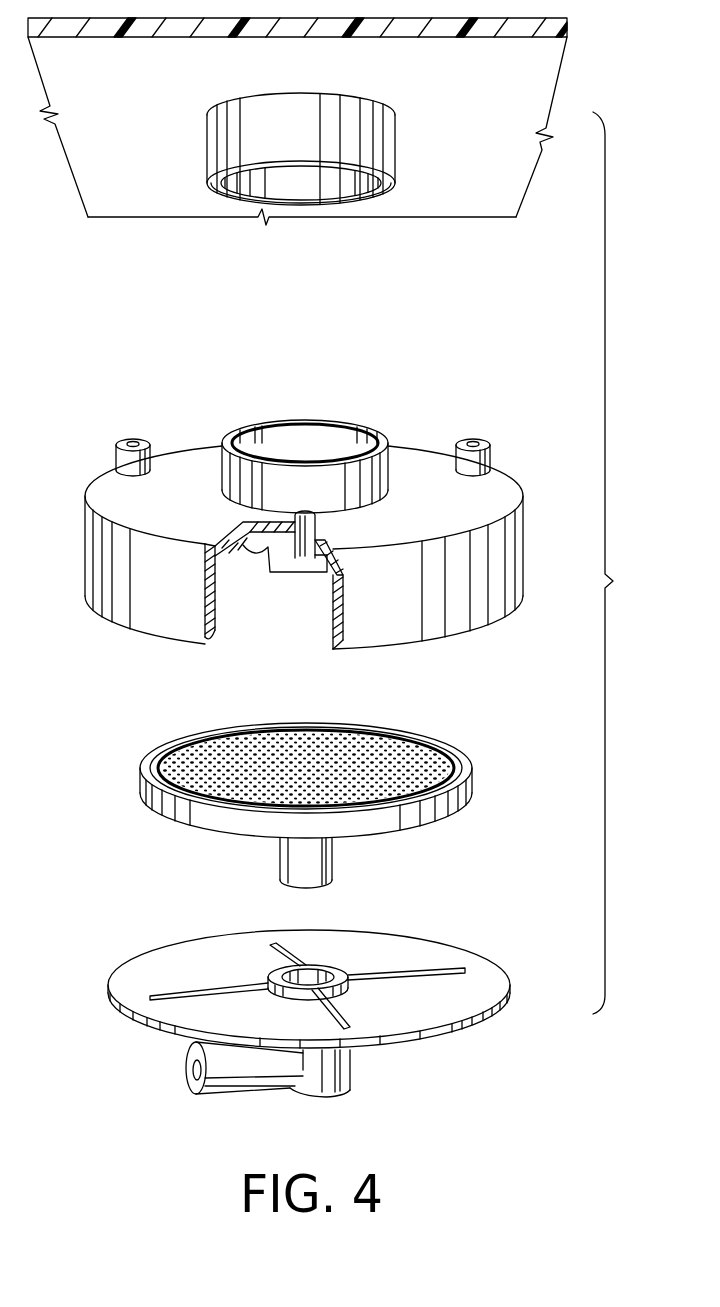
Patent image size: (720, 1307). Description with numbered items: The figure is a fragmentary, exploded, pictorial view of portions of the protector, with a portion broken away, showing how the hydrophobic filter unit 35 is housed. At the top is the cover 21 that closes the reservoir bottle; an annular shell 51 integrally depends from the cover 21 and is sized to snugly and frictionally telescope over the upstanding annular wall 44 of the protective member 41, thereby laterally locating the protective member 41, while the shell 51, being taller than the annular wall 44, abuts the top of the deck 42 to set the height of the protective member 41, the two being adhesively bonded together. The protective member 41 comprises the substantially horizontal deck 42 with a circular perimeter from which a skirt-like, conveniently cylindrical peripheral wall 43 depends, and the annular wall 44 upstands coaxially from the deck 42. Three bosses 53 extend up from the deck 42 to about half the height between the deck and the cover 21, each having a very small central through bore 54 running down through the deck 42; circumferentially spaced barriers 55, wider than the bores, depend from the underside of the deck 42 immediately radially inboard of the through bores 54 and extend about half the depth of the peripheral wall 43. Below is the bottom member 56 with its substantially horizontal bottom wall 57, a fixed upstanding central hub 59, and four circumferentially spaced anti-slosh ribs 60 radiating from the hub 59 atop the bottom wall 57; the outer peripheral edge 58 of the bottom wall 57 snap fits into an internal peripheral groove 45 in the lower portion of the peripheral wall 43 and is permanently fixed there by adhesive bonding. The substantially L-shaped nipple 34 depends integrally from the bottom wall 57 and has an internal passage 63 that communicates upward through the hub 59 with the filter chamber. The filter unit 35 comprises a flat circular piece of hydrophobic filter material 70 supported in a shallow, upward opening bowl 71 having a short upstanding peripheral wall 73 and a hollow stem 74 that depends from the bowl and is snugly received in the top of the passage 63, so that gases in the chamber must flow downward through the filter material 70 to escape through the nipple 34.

The cover 21 is at (515, 58).
The annular shell 51 is at (378, 147).
The protective member 41 is at (315, 535).
The deck 42 is at (222, 542).
The peripheral wall 43 is at (497, 588).
The annular wall 44 is at (222, 458).
The internal peripheral groove 45 is at (330, 622).
The bosses 53 is at (118, 456).
The through bore 54 is at (131, 443).
The barriers 55 is at (303, 568).
The hydrophobic filter unit 35 is at (297, 786).
The filter material 70 is at (218, 745).
The bowl 71 is at (134, 768).
The peripheral wall 73 is at (156, 794).
The hollow stem 74 is at (295, 856).
The bottom member 56 is at (340, 1008).
The bottom wall 57 is at (452, 1012).
The outer peripheral edge 58 is at (503, 1005).
The central hub 59 is at (350, 985).
The anti-slosh ribs 60 is at (252, 988).
The internal passage 63 is at (188, 1070).
The nipple 34 is at (310, 1078).